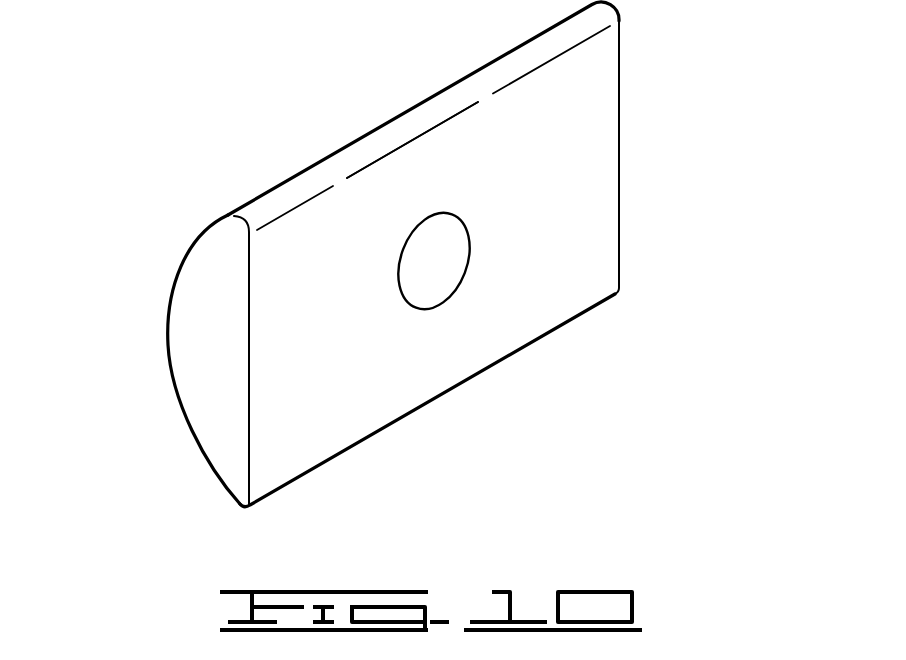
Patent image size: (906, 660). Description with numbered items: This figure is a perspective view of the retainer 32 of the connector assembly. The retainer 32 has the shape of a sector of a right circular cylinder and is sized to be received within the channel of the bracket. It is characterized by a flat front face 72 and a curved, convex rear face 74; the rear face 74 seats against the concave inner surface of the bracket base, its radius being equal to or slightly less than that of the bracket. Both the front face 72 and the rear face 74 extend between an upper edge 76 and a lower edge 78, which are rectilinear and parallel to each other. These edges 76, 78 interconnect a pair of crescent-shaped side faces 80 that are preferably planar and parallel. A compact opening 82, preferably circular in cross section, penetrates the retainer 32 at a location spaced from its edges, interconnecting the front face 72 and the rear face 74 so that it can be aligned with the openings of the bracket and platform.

The retainer 32 is at (495, 117).
The front face 72 is at (394, 254).
The rear face 74 is at (167, 313).
The upper edge 76 is at (323, 157).
The lower edge 78 is at (365, 442).
The side faces 80 is at (619, 191).
The opening 82 is at (433, 280).